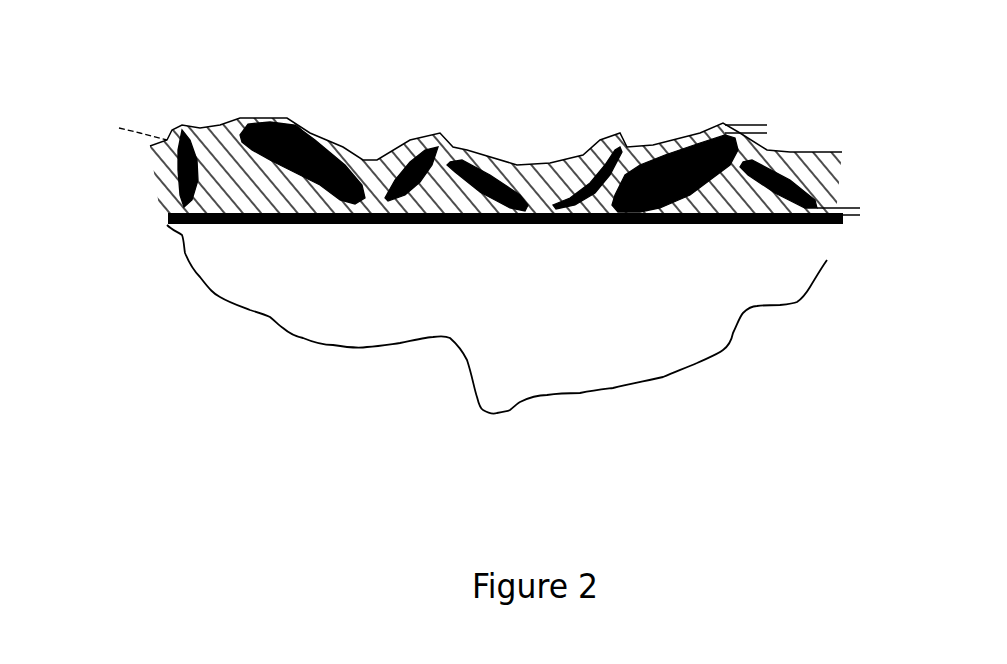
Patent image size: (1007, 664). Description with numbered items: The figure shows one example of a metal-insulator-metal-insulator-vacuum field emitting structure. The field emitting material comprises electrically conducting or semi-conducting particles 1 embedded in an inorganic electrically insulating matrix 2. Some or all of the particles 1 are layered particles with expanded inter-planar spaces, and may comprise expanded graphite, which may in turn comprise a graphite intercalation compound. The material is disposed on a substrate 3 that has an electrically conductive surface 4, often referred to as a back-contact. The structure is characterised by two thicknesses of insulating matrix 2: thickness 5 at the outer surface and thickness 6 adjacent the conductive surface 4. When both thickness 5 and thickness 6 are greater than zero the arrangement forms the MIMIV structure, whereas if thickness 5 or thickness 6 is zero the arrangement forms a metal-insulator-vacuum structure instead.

The electrically conducting or semi-conducting particles 1 is at (310, 150).
The inorganic electrically insulating matrix 2 is at (518, 167).
The substrate 3 is at (423, 300).
The electrically conductive surface 4 is at (167, 225).
The thickness 5 is at (772, 124).
The thickness 6 is at (858, 209).